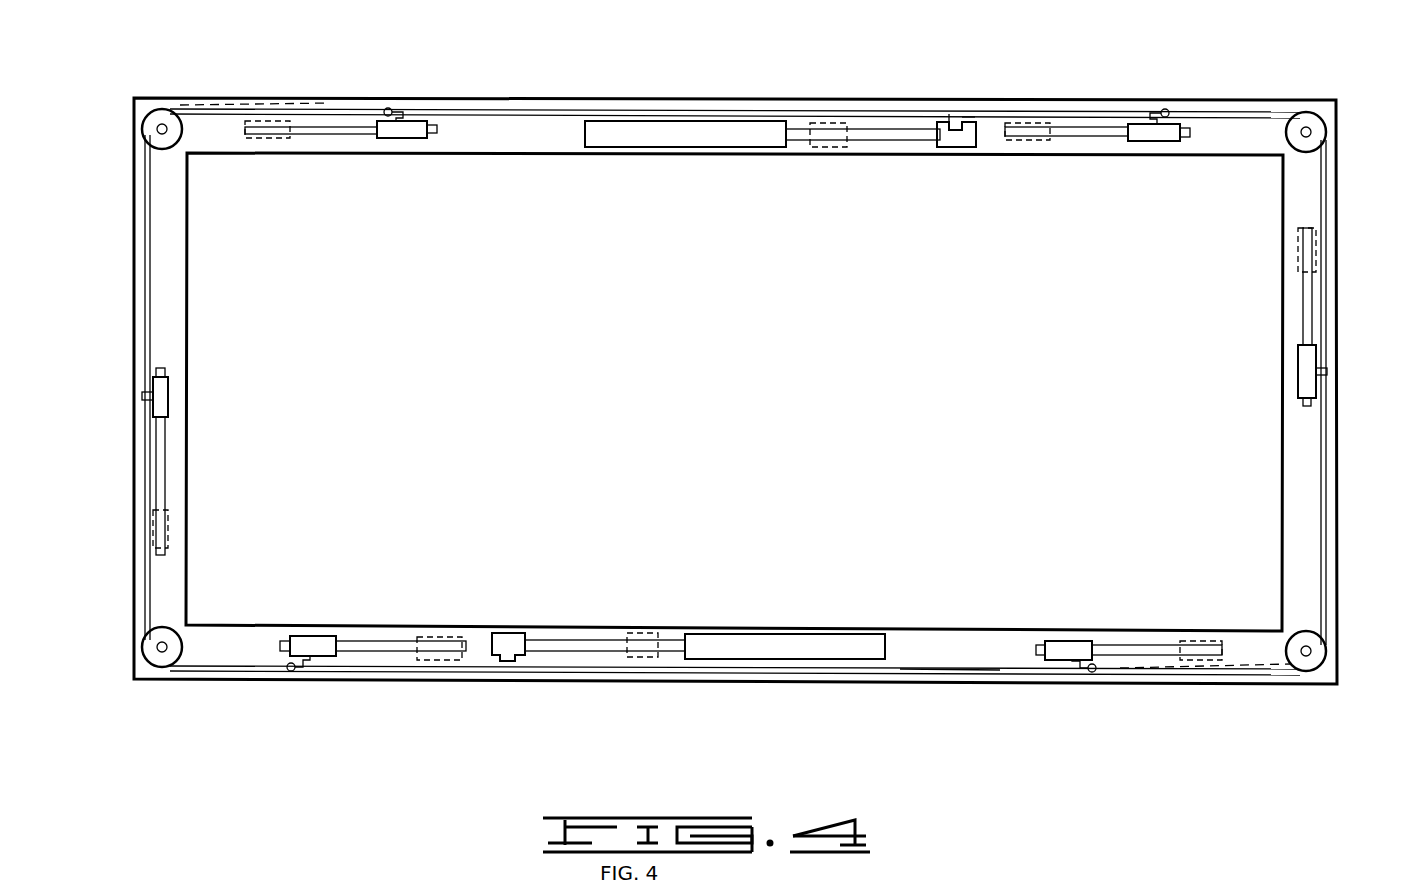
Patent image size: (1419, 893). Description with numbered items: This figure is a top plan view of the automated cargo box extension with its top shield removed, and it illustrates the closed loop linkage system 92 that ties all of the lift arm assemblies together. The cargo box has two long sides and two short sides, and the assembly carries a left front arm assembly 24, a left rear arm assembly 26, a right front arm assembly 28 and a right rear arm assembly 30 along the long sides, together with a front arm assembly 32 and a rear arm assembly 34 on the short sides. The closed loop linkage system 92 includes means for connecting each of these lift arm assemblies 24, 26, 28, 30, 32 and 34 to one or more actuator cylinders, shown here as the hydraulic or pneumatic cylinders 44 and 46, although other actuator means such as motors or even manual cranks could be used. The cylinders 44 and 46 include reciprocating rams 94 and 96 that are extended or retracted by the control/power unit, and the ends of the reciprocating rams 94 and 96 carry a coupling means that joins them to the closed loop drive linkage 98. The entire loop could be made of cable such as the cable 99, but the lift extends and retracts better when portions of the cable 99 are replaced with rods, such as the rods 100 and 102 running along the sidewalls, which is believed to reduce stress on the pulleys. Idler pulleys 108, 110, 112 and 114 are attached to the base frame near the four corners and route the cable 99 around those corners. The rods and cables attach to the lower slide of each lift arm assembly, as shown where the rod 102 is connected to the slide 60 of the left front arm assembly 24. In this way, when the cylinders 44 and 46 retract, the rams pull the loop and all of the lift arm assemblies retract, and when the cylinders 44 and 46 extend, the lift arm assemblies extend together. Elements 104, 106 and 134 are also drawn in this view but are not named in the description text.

The left front arm assembly 24 is at (1105, 95).
The left rear arm assembly 26 is at (328, 92).
The right front arm assembly 28 is at (1145, 686).
The right rear arm assembly 30 is at (377, 688).
The front arm assembly 32 is at (1342, 294).
The rear arm assembly 34 is at (126, 476).
The actuator cylinder 44 is at (798, 648).
The actuator cylinder 46 is at (680, 130).
The slide 60 is at (1140, 130).
The closed loop linkage system 92 is at (238, 700).
The reciprocating ram 94 is at (576, 648).
The reciprocating ram 96 is at (858, 130).
The closed loop drive linkage 98 is at (1338, 598).
The cable 99 is at (1322, 551).
The rod 100 is at (960, 668).
The rod 102 is at (925, 112).
The lower coupling block 104 is at (500, 662).
The upper coupling block 106 is at (948, 122).
The idler pulley 108 is at (1306, 665).
The idler pulley 110 is at (1312, 118).
The idler pulley 112 is at (160, 108).
The idler pulley 114 is at (160, 660).
The lower guide block 134 is at (654, 658).